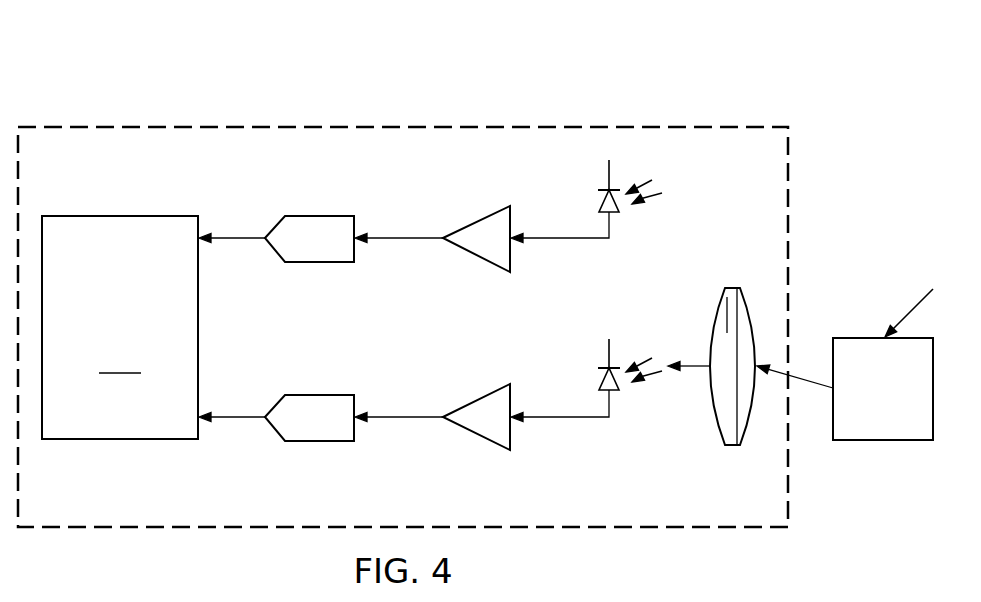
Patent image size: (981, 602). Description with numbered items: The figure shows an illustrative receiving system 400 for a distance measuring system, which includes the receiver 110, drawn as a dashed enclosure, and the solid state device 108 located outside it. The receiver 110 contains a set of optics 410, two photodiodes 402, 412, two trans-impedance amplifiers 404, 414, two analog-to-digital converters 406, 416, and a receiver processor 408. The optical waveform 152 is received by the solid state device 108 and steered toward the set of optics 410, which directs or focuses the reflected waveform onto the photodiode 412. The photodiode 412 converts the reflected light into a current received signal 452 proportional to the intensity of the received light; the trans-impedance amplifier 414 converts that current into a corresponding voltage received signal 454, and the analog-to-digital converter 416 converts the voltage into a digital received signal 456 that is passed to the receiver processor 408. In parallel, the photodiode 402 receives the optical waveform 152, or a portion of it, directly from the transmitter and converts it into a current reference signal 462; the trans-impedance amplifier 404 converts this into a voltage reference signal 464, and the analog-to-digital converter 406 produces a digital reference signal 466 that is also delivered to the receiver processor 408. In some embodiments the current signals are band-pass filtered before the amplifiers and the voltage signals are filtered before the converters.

The receiving system 400 is at (698, 57).
The receiver 110 is at (346, 116).
The receiver processor 408 is at (120, 327).
The analog-to-digital converter 406 is at (315, 216).
The analog-to-digital converter 416 is at (315, 441).
The trans-impedance amplifier 404 is at (470, 222).
The trans-impedance amplifier 414 is at (474, 436).
The photodiode 402 is at (603, 200).
The photodiode 412 is at (603, 378).
The current reference signal 462 is at (559, 239).
The current received signal 452 is at (559, 418).
The voltage reference signal 464 is at (404, 238).
The voltage received signal 454 is at (404, 418).
The digital reference signal 466 is at (243, 238).
The digital received signal 456 is at (243, 418).
The optical waveform 152 is at (655, 196).
The set of optics 410 is at (712, 405).
The solid state device 108 is at (883, 441).